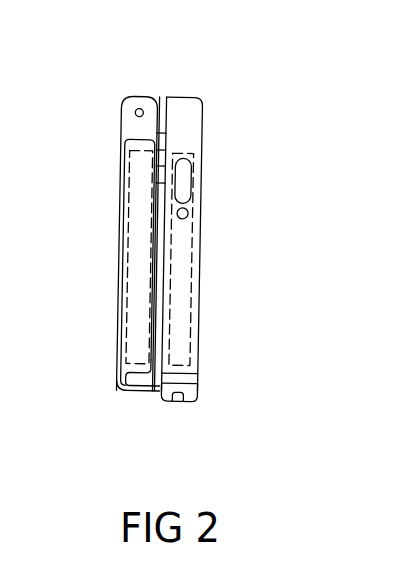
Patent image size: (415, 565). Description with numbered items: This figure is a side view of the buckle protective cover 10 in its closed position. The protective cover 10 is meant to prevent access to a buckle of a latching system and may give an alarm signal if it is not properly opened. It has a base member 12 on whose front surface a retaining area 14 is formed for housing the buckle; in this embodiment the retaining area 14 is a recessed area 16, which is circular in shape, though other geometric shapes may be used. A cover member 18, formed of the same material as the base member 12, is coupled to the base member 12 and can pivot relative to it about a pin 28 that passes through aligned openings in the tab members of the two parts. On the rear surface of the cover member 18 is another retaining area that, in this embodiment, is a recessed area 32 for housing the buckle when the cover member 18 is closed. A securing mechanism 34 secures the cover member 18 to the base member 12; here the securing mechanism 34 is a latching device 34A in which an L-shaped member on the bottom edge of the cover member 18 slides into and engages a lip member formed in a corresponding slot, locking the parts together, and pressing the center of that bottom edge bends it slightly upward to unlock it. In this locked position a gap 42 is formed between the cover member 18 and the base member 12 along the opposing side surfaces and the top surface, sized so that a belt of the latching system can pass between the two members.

The buckle protective cover 10 is at (305, 95).
The base member 12 is at (185, 95).
The retaining area 14 is at (215, 278).
The recessed area 16 is at (178, 328).
The cover member 18 is at (118, 220).
The pin 28 is at (140, 110).
The recessed area 32 is at (137, 305).
The securing mechanism 34 is at (182, 419).
The latching device 34A is at (143, 407).
The gap 42 is at (158, 237).